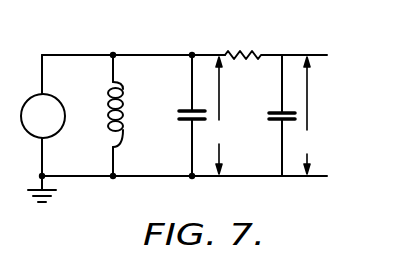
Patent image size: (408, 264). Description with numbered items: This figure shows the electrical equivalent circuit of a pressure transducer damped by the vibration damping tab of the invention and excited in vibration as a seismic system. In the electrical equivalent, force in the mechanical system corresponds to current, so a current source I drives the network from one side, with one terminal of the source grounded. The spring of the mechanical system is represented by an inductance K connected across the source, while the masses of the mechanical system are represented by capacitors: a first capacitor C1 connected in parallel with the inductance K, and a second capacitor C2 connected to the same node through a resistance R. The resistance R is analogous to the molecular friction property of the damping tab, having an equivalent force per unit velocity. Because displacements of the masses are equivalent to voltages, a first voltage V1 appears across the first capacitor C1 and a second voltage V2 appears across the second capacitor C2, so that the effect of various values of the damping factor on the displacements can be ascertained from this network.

The current source I is at (43, 116).
The inductance K is at (103, 114).
The first capacitor C1 is at (178, 113).
The second capacitor C2 is at (268, 114).
The resistance element R is at (251, 42).
The first voltage V1 is at (219, 115).
The second voltage V2 is at (307, 115).